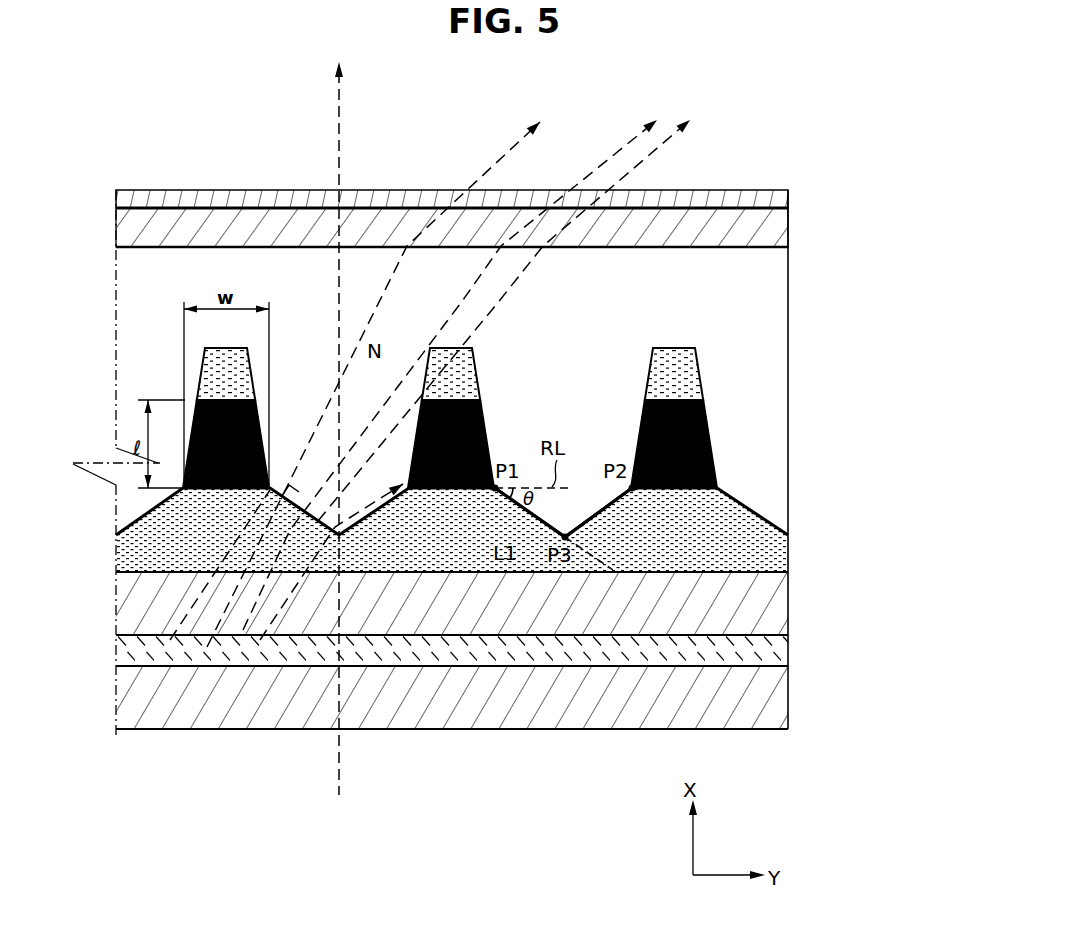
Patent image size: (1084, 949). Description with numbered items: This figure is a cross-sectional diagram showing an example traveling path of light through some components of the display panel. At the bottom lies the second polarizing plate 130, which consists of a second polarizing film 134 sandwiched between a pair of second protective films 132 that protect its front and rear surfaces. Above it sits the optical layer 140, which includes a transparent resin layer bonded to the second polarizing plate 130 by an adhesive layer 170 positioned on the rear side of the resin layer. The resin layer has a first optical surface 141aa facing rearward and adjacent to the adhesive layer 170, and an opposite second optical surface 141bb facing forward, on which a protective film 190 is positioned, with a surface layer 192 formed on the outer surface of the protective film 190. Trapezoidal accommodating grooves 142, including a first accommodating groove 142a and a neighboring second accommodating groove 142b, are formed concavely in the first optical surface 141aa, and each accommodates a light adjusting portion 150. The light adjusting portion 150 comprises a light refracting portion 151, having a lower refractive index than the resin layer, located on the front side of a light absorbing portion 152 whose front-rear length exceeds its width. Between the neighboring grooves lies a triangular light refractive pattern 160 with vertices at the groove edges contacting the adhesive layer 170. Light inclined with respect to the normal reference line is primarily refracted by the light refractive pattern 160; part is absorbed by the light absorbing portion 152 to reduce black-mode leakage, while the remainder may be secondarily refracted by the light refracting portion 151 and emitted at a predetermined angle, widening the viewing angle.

The second polarizing plate 130 is at (870, 603).
The second protective film 132 is at (773, 603).
The second polarizing film 134 is at (770, 650).
The optical layer 140 is at (790, 327).
The first optical surface 141aa is at (753, 507).
The second optical surface 141bb is at (747, 237).
The accommodating groove 142 is at (482, 383).
The first accommodating groove 142a is at (450, 348).
The second accommodating groove 142b is at (674, 347).
The light adjusting portion 150 is at (577, 348).
The light refracting portion 151 is at (470, 373).
The light absorbing portion 152 is at (482, 418).
The light refractive pattern 160 is at (600, 508).
The adhesive layer 170 is at (770, 557).
The protective film 190 is at (775, 222).
The surface layer 192 is at (782, 190).